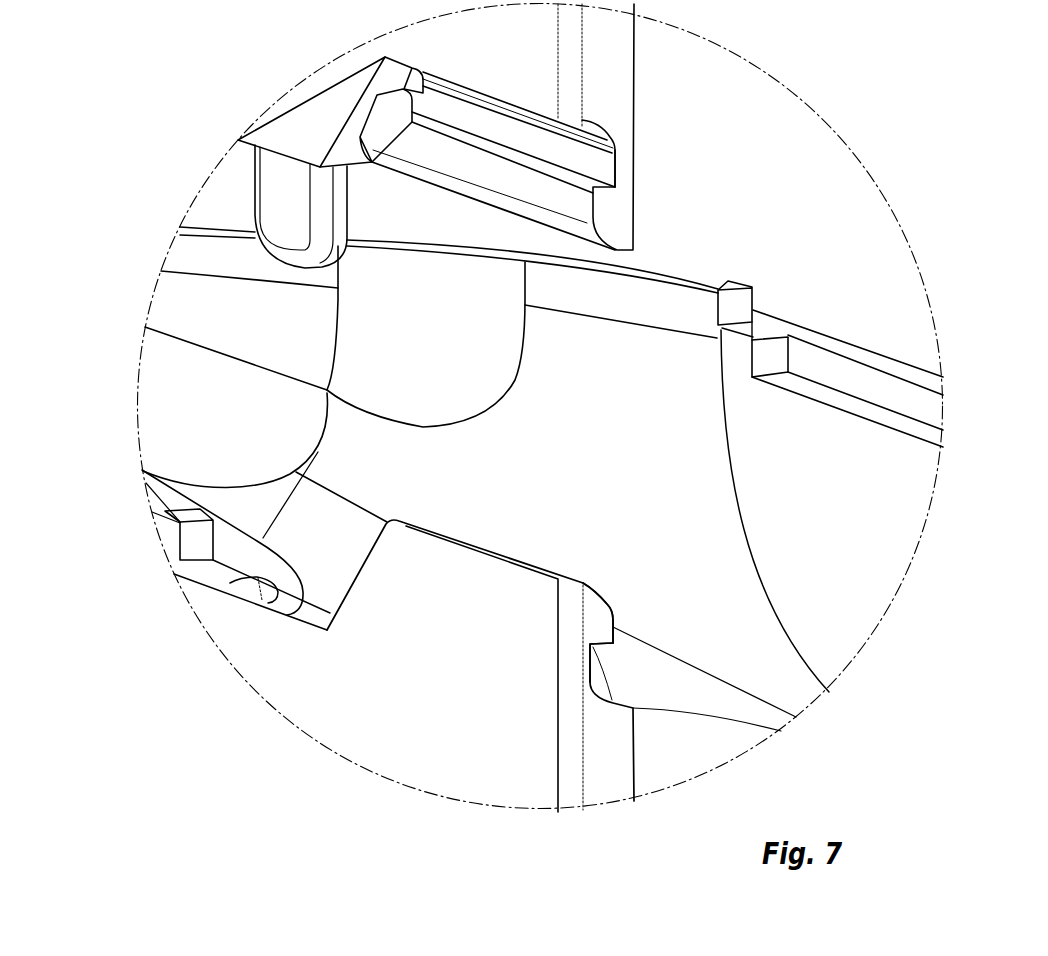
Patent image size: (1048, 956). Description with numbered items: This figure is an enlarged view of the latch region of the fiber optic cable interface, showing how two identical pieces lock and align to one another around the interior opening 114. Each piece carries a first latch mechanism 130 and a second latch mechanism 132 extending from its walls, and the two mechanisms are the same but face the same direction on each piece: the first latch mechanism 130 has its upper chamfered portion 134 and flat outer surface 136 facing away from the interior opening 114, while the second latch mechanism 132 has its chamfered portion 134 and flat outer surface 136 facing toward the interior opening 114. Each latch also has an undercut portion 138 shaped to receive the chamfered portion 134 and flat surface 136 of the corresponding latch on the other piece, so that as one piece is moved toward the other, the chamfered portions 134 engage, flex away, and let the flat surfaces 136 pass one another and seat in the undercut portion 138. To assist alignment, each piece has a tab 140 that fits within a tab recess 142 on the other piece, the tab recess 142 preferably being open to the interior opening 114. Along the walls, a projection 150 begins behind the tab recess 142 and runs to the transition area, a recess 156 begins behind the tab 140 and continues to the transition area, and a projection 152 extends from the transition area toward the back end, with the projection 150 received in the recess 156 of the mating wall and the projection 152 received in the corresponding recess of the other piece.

The interior opening 114 is at (816, 514).
The first latch mechanism 130 is at (483, 408).
The second latch mechanism 132 is at (603, 635).
The upper chamfered portion 134 is at (592, 237).
The flat outer surface 136 is at (586, 205).
The undercut portion 138 is at (601, 169).
The tab 140 is at (350, 222).
The tab recess 142 is at (268, 603).
The projection 150 is at (192, 543).
The projection 152 is at (728, 285).
The recess 156 is at (913, 400).